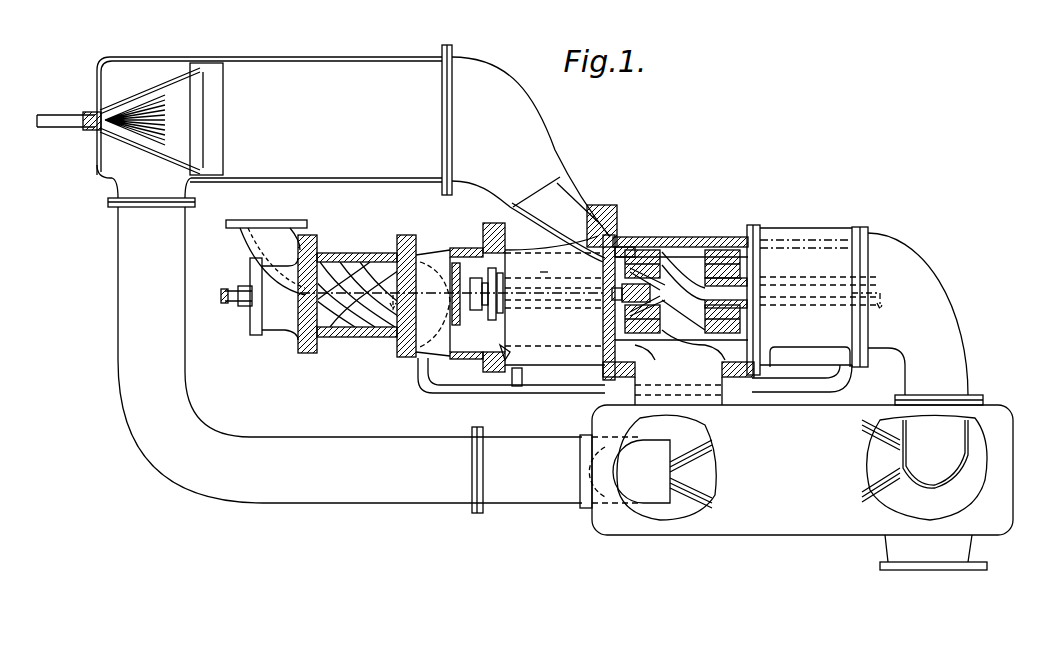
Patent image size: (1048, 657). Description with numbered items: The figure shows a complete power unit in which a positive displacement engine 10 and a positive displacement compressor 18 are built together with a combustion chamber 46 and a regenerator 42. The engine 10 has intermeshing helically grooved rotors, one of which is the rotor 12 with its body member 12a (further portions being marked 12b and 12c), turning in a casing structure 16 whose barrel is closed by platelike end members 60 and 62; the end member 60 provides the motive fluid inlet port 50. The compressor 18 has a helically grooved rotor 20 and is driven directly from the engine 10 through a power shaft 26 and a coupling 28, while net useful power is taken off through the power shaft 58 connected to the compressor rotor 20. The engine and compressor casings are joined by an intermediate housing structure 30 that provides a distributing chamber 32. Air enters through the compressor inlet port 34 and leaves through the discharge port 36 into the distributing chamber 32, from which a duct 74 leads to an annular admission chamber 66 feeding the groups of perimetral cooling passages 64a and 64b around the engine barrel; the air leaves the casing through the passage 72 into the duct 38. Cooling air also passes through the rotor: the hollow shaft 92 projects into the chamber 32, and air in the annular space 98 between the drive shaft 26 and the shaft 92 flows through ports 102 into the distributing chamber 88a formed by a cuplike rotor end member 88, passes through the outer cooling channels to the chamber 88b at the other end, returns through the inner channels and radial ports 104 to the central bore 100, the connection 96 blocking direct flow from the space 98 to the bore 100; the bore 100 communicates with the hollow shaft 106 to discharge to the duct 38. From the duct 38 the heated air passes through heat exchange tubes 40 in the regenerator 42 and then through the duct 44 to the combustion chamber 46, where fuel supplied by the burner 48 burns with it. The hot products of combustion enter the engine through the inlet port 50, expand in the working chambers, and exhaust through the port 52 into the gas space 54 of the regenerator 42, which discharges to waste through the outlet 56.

The engine 10 is at (680, 250).
The rotor 12 is at (690, 248).
The rotor body member 12a is at (712, 250).
The rotor section 12b is at (635, 260).
The rotor shaft 12c is at (757, 262).
The casing structure 16 is at (708, 245).
The compressor 18 is at (365, 255).
The compressor rotor 20 is at (330, 262).
The power shaft 26 is at (513, 290).
The coupling 28 is at (471, 284).
The intermediate housing structure 30 is at (474, 248).
The distributing chamber 32 is at (468, 360).
The compressor inlet port 34 is at (268, 233).
The discharge port 36 is at (397, 340).
The duct 38 is at (952, 437).
The heat exchange tubes 40 is at (877, 455).
The regenerator 42 is at (755, 527).
The duct 44 is at (120, 268).
The combustion chamber 46 is at (310, 64).
The burner 48 is at (88, 112).
The inlet port 50 is at (614, 237).
The exhaust port 52 is at (750, 422).
The gas space 54 is at (888, 501).
The outlet 56 is at (930, 562).
The power shaft 58 is at (238, 291).
The end member 60 is at (610, 233).
The end member 62 is at (753, 240).
The group of cooling passages 64a is at (672, 240).
The group of cooling passages 64b is at (727, 240).
The annular admission chamber 66 is at (622, 250).
The passage 72 is at (800, 236).
The duct 74 is at (502, 352).
The rotor disc 88 is at (660, 342).
The distributing chamber 88a is at (640, 342).
The distributing chamber 88b is at (720, 349).
The hollow shaft 92 is at (548, 272).
The connection 96 is at (650, 305).
The annular space 98 is at (605, 303).
The central bore 100 is at (728, 293).
The ports 102 is at (603, 282).
The radial ports 104 is at (638, 272).
The hollow shaft 106 is at (818, 284).